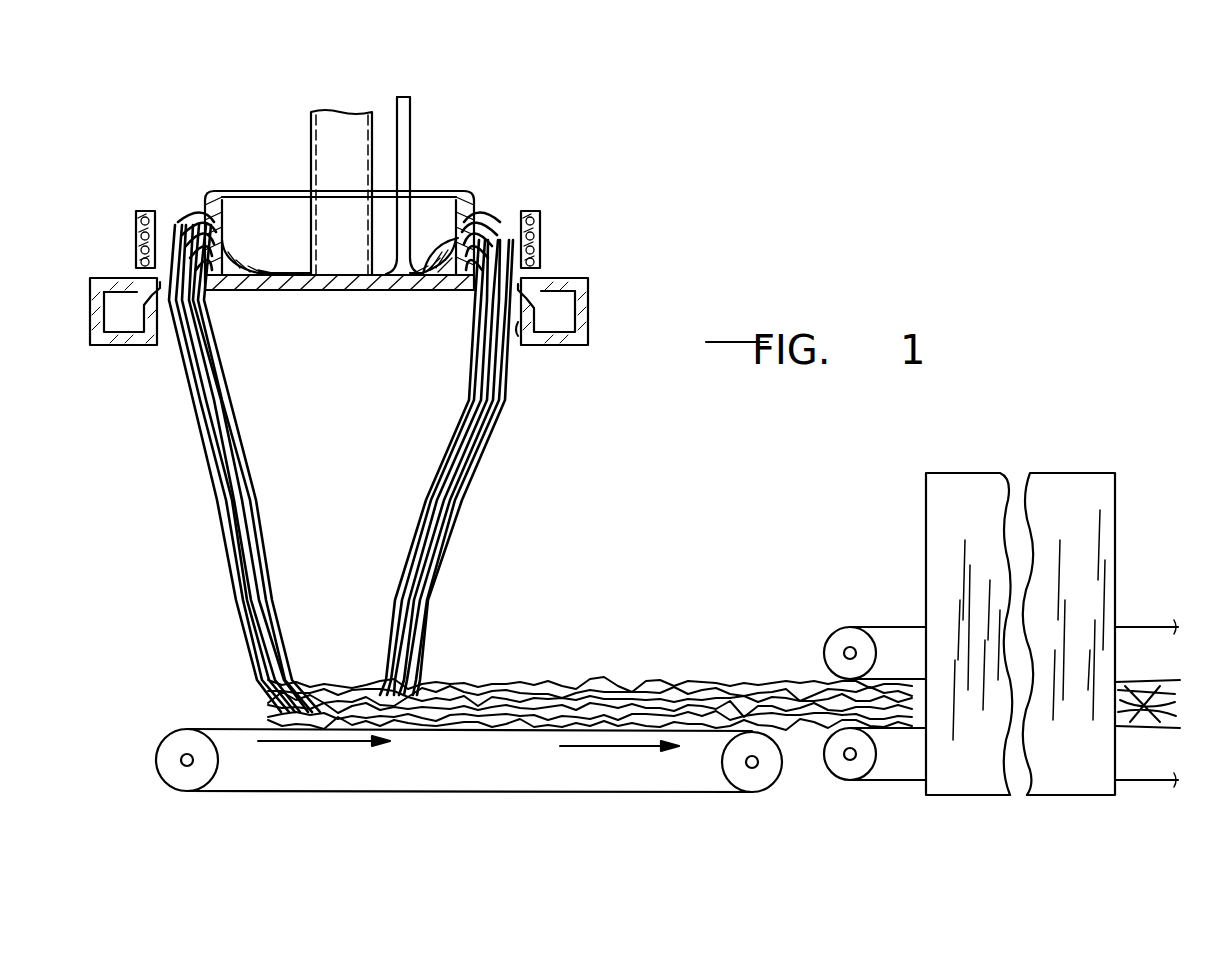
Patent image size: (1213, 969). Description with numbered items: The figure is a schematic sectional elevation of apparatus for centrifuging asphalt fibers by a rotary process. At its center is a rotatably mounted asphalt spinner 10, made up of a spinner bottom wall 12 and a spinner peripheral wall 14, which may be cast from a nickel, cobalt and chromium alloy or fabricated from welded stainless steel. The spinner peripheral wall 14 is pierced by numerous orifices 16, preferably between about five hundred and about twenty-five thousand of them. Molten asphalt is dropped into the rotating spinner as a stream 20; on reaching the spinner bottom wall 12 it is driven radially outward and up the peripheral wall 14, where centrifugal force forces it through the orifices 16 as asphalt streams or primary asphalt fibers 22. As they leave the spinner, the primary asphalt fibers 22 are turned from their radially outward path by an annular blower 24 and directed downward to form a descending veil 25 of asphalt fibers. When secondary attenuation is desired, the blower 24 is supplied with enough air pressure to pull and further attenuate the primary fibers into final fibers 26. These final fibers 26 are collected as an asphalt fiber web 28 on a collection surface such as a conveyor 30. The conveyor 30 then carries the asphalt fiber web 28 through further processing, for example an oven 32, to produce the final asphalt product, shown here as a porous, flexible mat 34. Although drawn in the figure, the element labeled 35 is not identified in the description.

The asphalt spinner 10 is at (255, 150).
The spinner bottom wall 12 is at (272, 292).
The spinner peripheral wall 14 is at (440, 247).
The orifices 16 is at (160, 268).
The stream 20 is at (411, 128).
The primary asphalt fibers 22 is at (505, 246).
The annular blower 24 is at (590, 310).
The veil 25 is at (423, 524).
The final fibers 26 is at (514, 332).
The asphalt fiber web 28 is at (578, 676).
The conveyor 30 is at (227, 728).
The oven 32 is at (983, 473).
The mat 34 is at (1142, 680).
The heating coil 35 is at (136, 222).